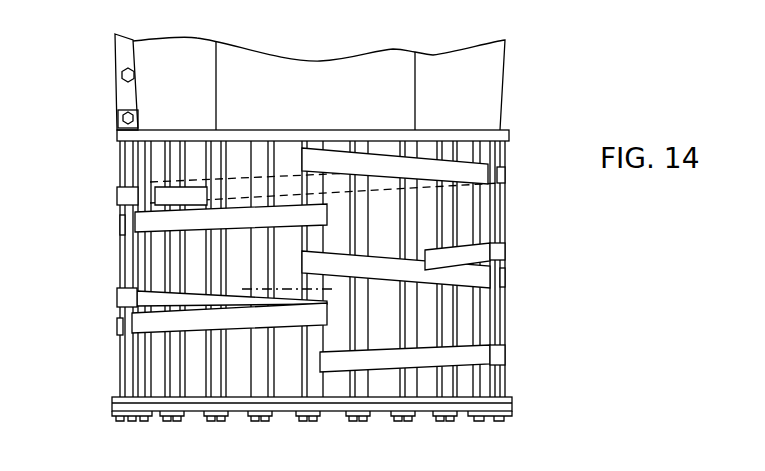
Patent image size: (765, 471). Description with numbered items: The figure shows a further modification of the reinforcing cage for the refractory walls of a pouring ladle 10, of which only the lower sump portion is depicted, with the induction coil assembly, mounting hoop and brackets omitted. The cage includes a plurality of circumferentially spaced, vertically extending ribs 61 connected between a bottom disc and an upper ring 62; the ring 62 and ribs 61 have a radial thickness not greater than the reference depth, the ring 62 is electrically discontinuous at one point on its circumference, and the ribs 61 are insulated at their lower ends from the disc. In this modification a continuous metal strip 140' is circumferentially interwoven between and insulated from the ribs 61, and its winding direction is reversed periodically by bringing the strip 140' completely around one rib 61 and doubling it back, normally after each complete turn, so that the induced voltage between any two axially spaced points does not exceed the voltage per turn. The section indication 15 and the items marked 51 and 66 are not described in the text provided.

The pouring ladle 10 is at (510, 83).
The side plate 51 is at (117, 62).
The bolt bracket 66 is at (118, 111).
The upper ring 62 is at (260, 129).
The ribs 61 is at (416, 391).
The continuous metal strip 140' is at (536, 355).
The section line 15- 15 is at (335, 284).